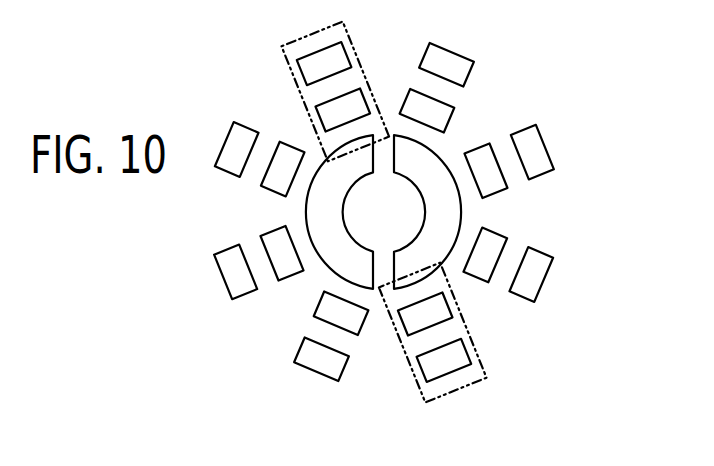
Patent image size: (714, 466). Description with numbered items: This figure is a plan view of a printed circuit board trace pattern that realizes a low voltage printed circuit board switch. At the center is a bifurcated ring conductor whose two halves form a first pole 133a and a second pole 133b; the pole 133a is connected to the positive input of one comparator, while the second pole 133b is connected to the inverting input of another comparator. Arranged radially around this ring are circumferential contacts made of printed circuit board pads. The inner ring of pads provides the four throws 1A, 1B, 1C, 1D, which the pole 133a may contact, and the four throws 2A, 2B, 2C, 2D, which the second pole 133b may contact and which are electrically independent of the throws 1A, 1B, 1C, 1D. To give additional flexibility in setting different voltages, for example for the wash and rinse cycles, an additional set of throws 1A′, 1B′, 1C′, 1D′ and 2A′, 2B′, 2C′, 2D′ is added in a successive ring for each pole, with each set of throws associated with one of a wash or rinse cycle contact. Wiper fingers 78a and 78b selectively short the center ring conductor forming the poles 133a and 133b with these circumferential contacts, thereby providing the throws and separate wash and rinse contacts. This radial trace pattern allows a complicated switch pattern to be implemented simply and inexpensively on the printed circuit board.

The pole 133a is at (355, 248).
The second pole 133b is at (447, 213).
The wiper finger 78a is at (345, 28).
The wiper finger 78b is at (483, 363).
The throw 1A is at (342, 57).
The additional throw 1A′ is at (320, 125).
The throw 1B is at (228, 148).
The additional throw 1B′ is at (275, 185).
The throw 1C is at (230, 258).
The additional throw 1C′ is at (285, 278).
The throw 1D is at (305, 352).
The additional throw 1D′ is at (355, 330).
The throw 2A is at (430, 367).
The additional throw 2A′ is at (445, 310).
The throw 2B is at (537, 278).
The additional throw 2B′ is at (497, 243).
The throw 2C is at (537, 142).
The additional throw 2C′ is at (487, 153).
The throw 2D is at (448, 53).
The additional throw 2D′ is at (442, 115).